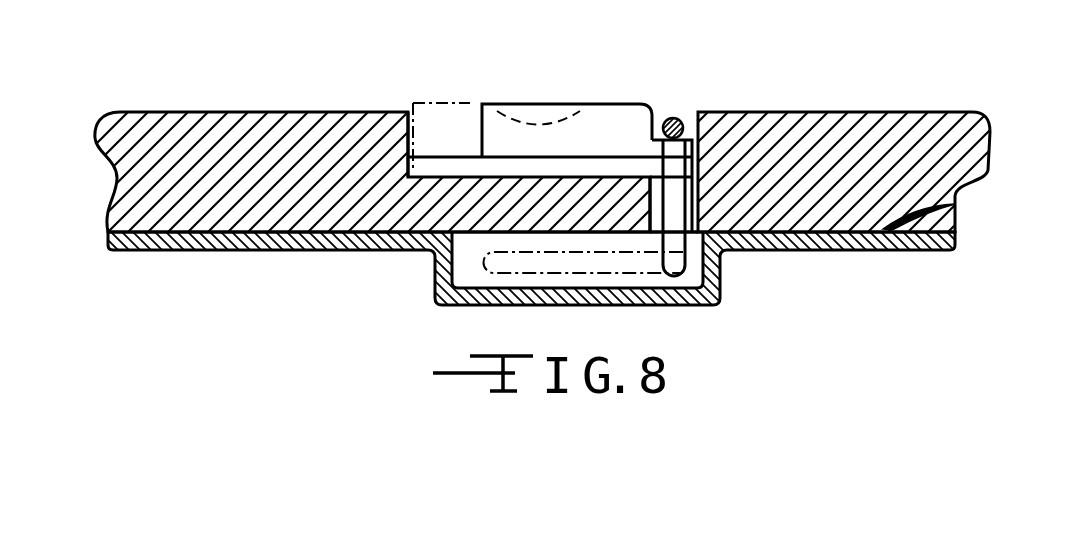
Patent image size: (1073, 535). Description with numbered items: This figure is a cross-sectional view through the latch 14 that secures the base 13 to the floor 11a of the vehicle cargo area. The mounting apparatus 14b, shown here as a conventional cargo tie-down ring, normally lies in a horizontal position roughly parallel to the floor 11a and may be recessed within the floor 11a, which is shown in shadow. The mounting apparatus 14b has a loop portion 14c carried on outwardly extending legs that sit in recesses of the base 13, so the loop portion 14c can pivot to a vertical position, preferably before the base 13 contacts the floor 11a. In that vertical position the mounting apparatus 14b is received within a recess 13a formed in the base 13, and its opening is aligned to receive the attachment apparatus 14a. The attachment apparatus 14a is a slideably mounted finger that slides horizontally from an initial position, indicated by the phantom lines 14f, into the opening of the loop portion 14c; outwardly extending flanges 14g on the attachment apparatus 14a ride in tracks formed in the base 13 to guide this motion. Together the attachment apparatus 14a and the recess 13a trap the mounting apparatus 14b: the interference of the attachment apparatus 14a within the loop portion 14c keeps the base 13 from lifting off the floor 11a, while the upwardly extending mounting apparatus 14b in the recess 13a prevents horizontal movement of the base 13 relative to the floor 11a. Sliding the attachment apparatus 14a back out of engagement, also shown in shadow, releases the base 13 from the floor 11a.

The latch 14 is at (350, 90).
The phantom lines 14f is at (443, 100).
The outwardly extending flanges 14g is at (571, 166).
The loop portion 14c is at (682, 209).
The attachment apparatus 14a is at (722, 148).
The mounting apparatus 14b is at (682, 113).
The recess 13a is at (690, 127).
The base 13 is at (853, 113).
The floor 11a is at (950, 207).